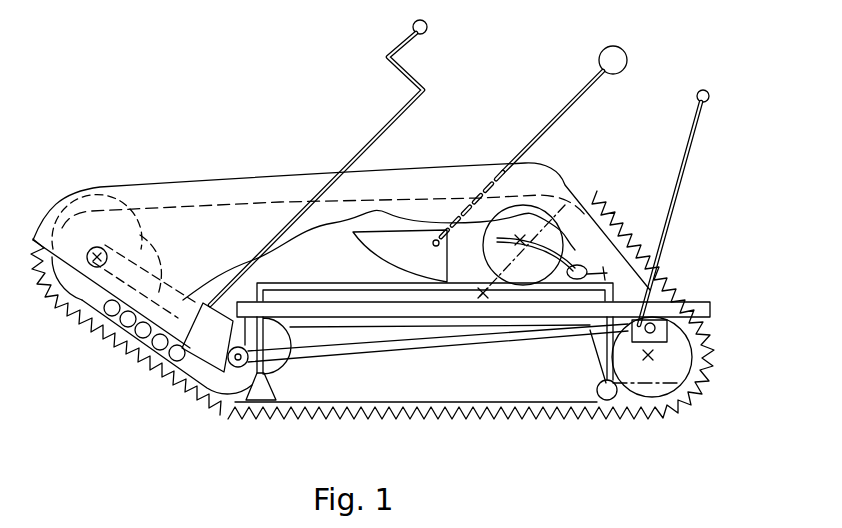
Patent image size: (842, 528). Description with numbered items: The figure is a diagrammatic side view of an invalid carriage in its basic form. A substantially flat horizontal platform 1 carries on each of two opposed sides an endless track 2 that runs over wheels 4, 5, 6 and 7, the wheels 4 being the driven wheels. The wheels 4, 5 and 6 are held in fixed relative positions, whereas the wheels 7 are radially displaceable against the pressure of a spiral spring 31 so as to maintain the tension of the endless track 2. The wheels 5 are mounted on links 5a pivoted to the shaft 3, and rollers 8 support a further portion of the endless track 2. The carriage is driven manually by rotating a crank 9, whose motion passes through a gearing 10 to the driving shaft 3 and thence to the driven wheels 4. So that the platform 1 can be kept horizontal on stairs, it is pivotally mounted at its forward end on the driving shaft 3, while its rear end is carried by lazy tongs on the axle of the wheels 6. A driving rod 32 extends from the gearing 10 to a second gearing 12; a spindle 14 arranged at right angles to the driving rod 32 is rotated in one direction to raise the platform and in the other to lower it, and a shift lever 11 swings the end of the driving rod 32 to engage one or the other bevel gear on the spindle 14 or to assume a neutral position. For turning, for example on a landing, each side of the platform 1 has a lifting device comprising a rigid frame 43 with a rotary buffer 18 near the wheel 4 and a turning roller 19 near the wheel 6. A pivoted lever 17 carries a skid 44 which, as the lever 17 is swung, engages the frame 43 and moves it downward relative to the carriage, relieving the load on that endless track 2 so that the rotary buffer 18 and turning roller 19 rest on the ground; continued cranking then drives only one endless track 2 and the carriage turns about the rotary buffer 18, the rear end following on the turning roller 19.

The platform 1 is at (441, 318).
The endless track 2 is at (612, 225).
The driving shaft 3 is at (237, 368).
The driven wheels 4 is at (214, 382).
The wheels 5 is at (103, 244).
The links 5a is at (156, 261).
The wheels 6 is at (675, 379).
The wheels 7 is at (534, 274).
The rollers 8 is at (140, 336).
The crank 9 is at (392, 121).
The gearing 10 is at (205, 322).
The shift lever 11 is at (693, 133).
The second gearing 12 is at (662, 322).
The spindle 14 is at (655, 324).
The lever 17 is at (556, 122).
The rotary buffer 18 is at (272, 393).
The turning roller 19 is at (598, 386).
The spiral spring 31 is at (573, 228).
The driving rod 32 is at (363, 347).
The rigid frame 43 is at (308, 290).
The skid 44 is at (385, 248).